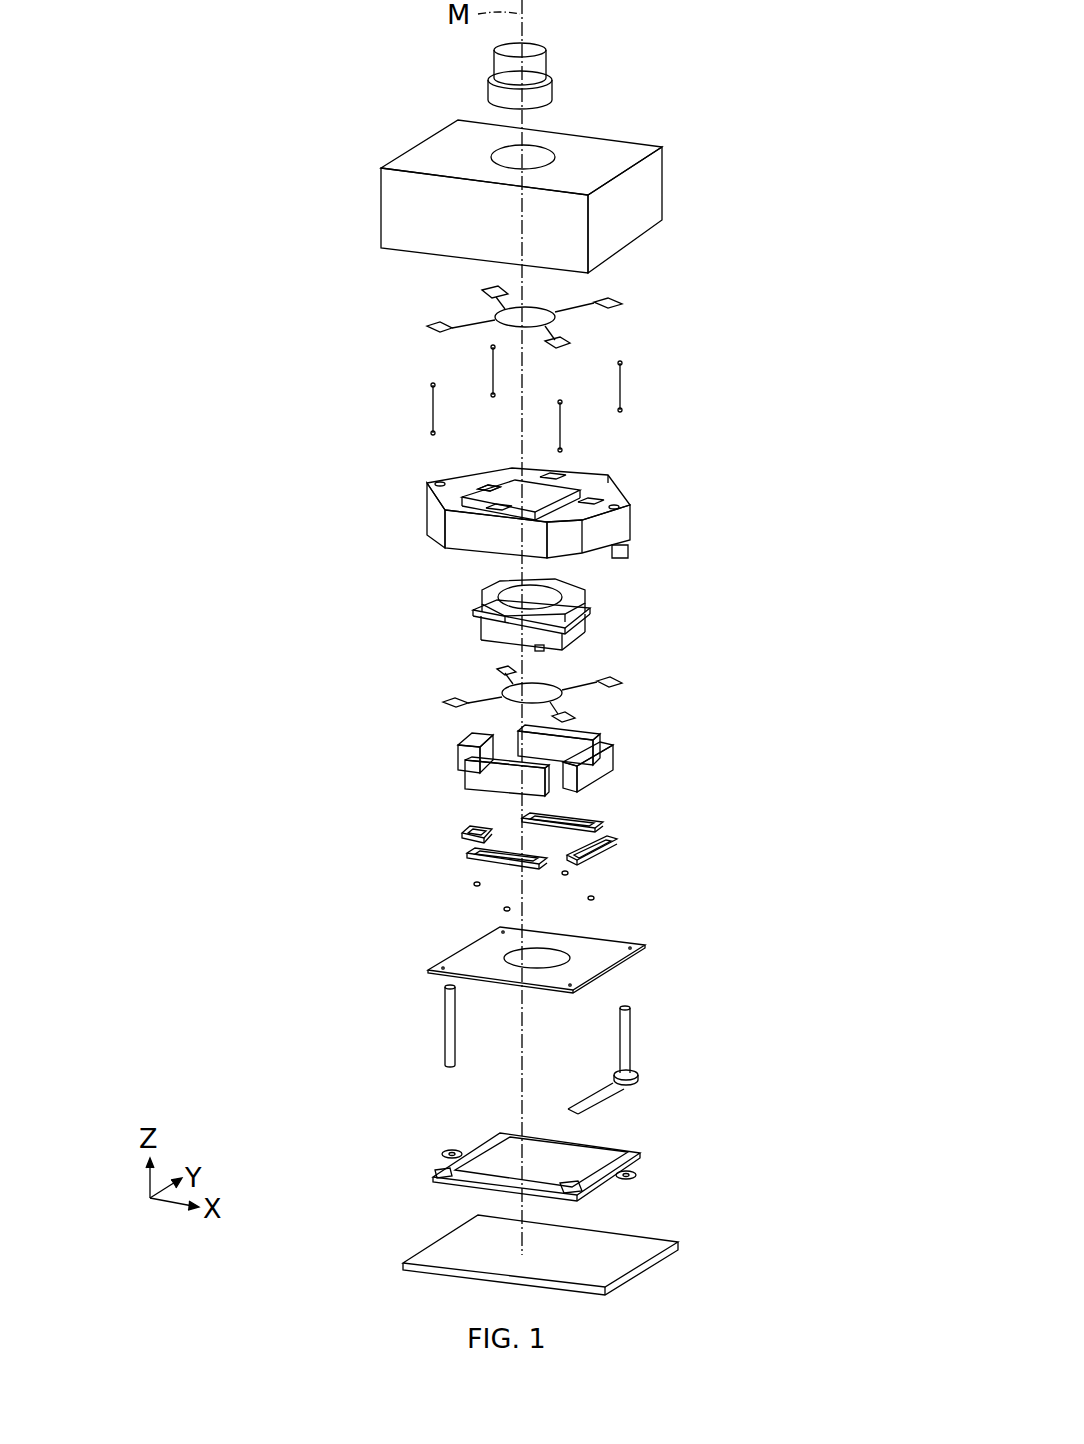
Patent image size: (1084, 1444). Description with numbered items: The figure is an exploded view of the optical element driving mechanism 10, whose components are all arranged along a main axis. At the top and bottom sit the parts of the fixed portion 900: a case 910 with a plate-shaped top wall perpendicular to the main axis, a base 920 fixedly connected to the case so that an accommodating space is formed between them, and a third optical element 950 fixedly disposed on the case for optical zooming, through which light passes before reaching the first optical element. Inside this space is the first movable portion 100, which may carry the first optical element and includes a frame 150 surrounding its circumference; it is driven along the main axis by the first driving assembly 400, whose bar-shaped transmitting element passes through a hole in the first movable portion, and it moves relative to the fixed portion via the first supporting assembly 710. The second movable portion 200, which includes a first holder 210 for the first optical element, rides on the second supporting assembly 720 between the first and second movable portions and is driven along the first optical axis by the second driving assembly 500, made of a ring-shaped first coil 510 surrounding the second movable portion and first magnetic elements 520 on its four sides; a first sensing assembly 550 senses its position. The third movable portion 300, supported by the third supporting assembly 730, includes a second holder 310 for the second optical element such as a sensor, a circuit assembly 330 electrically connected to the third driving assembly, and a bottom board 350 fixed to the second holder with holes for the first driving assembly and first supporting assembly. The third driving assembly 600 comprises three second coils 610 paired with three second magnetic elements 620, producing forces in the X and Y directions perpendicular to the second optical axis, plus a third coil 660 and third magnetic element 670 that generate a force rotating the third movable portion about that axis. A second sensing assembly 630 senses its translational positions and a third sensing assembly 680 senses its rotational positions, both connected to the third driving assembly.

The optical element driving mechanism 10 is at (162, 58).
The first movable portion 100 is at (630, 523).
The frame 150 is at (487, 492).
The second movable portion 200 is at (530, 624).
The first holder 210 is at (500, 641).
The third movable portion 300 is at (849, 326).
The second holder 310 is at (545, 1154).
The circuit assembly 330 is at (478, 952).
The bottom board 350 is at (640, 1175).
The first driving assembly 400 is at (631, 1040).
The second driving assembly 500 is at (164, 453).
The first coil 510 is at (590, 612).
The first magnetic elements 520 is at (521, 760).
The first sensing assembly 550 is at (546, 648).
The third driving assembly 600 is at (164, 579).
The second coils 610 is at (600, 846).
The second magnetic elements 620 is at (605, 765).
The second sensing assembly 630 is at (596, 897).
The third coil 660 is at (460, 835).
The third magnetic element 670 is at (455, 765).
The third sensing assembly 680 is at (473, 883).
The first supporting assembly 710 is at (443, 1025).
The second supporting assembly 720 is at (622, 303).
The third supporting assembly 730 is at (622, 385).
The fixed portion 900 is at (164, 326).
The case 910 is at (650, 188).
The base 920 is at (680, 1242).
The third optical element 950 is at (540, 67).